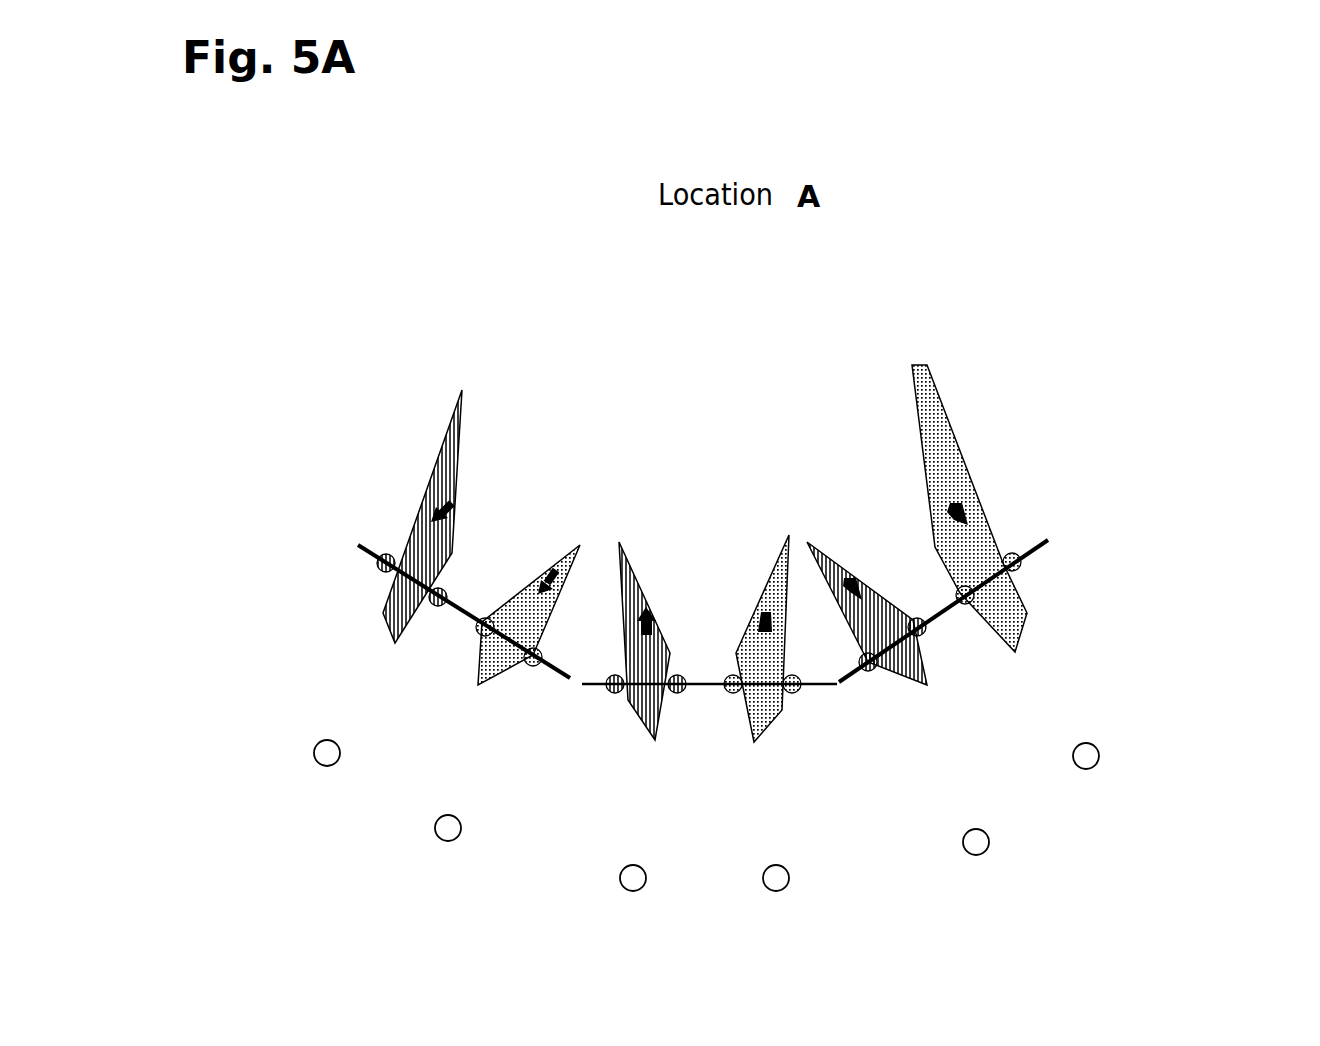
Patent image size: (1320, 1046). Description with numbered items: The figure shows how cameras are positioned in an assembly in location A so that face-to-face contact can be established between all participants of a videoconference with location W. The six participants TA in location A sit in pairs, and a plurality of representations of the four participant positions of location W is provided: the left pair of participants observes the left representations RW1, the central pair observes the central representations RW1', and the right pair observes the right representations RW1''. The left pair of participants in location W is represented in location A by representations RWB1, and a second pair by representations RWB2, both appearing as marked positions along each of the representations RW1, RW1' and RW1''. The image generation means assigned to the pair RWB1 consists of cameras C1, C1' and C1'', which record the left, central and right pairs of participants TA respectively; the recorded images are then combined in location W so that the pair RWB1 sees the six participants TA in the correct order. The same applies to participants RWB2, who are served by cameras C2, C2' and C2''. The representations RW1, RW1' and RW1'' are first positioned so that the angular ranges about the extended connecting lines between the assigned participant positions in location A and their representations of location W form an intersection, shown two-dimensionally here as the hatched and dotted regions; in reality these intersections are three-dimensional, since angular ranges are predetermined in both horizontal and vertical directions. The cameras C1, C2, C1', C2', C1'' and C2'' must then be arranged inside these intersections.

The left representations RW1 is at (444, 576).
The left pair of participants RWB1 is at (432, 602).
The participants RWB2 is at (526, 661).
The camera C1 is at (451, 516).
The camera C2 is at (534, 585).
The central representations RW1' is at (705, 727).
The camera C1' is at (653, 636).
The camera C2' is at (756, 636).
The right representations RW1'' is at (943, 647).
The camera C1'' is at (867, 591).
The camera C2'' is at (942, 508).
The participants TA is at (1098, 748).